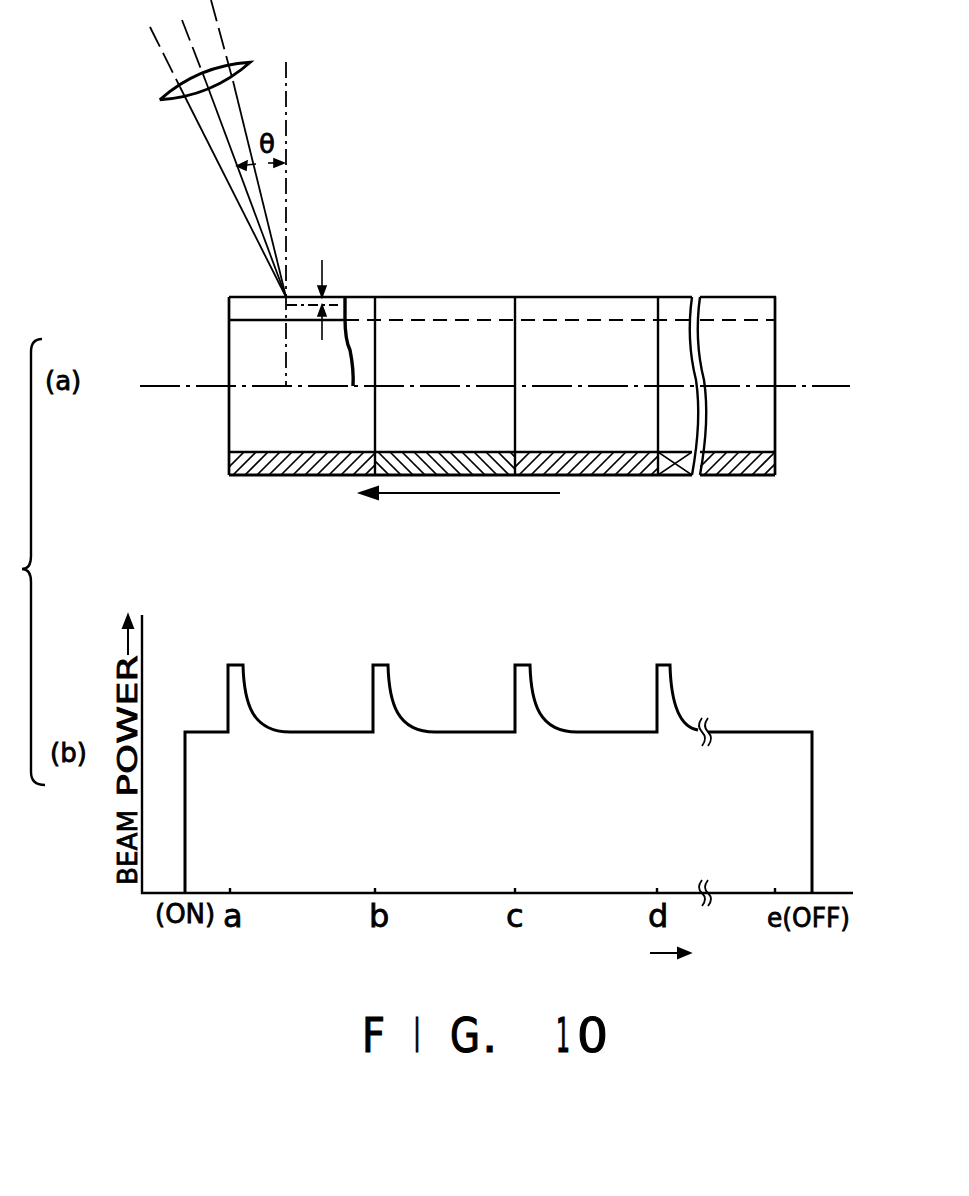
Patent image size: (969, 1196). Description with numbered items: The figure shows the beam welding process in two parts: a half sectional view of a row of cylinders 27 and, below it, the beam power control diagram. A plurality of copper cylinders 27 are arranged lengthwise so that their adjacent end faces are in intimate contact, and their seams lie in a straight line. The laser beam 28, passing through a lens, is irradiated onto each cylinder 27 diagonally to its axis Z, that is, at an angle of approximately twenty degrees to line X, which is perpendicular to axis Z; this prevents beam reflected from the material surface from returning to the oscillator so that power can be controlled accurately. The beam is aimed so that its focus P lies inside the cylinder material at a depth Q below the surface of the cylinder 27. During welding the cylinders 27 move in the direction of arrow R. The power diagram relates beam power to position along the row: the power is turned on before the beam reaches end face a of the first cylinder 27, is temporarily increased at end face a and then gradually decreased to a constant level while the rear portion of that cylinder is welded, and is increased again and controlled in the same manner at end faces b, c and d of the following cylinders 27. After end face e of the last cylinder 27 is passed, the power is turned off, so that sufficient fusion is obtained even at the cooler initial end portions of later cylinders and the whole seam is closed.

The cylinder 27 is at (285, 476).
The laser beam 28 is at (207, 131).
The focus P is at (285, 306).
The depth Q is at (310, 292).
The arrow R is at (420, 497).
The line x X is at (287, 210).
The axis z Z is at (493, 387).
The end face a is at (229, 313).
The end face b is at (375, 337).
The end face c is at (515, 337).
The end face d is at (658, 328).
The end face e is at (775, 328).